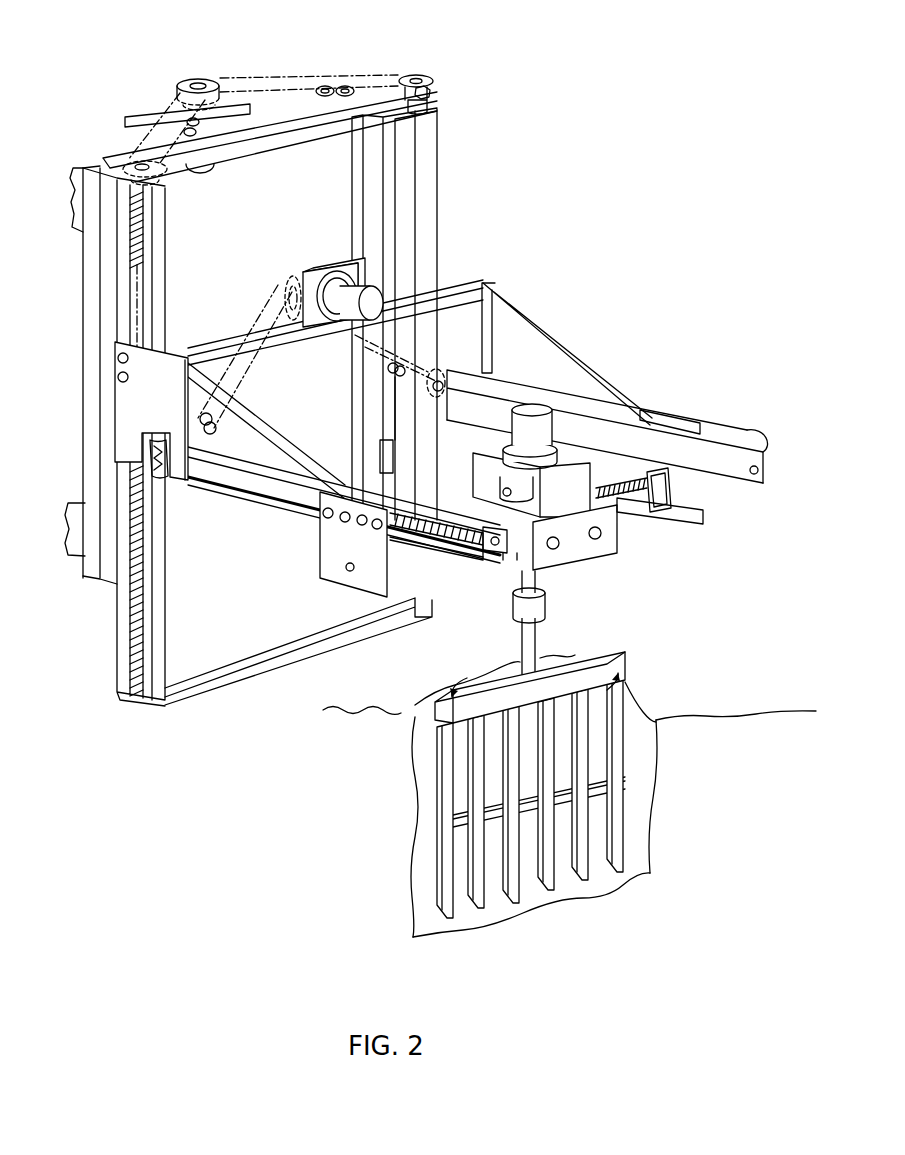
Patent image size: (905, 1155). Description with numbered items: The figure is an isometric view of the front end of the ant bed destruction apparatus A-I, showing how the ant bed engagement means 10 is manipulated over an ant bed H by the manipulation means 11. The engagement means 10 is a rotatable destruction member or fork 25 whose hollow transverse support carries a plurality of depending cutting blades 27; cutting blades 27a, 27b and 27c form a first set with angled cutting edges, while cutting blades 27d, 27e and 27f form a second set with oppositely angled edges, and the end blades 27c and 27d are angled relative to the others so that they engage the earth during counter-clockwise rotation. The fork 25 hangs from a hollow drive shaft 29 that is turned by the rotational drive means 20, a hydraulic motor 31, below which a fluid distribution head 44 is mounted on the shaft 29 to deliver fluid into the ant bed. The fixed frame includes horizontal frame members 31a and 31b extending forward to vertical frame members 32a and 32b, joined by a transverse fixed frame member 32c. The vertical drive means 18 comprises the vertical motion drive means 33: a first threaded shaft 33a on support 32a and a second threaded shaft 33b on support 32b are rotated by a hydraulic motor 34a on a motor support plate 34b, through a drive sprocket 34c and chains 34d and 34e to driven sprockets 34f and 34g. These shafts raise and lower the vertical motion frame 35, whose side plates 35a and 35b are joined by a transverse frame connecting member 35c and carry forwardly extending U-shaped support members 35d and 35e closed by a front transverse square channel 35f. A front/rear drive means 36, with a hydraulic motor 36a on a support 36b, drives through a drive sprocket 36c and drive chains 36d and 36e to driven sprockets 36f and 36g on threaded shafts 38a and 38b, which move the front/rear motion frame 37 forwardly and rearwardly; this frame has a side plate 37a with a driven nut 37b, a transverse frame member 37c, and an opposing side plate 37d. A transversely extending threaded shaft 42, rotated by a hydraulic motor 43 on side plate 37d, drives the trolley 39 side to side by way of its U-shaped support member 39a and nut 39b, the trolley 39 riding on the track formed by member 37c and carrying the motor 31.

The ant bed engagement means 10 is at (643, 638).
The manipulation means 11 is at (620, 257).
The vertical drive means 18 is at (449, 152).
The rotational drive means 20 is at (566, 396).
The rotatable destruction member 25 is at (563, 713).
The cutting blades 27 is at (520, 830).
The cutting blade 27a is at (550, 892).
The cutting blade 27b is at (588, 880).
The cutting blade 27c is at (625, 872).
The cutting blade 27d is at (443, 918).
The cutting blade 27e is at (480, 908).
The cutting blade 27f is at (514, 905).
The hollow drive shaft 29 is at (541, 584).
The hydraulic motor 31 is at (556, 425).
The horizontal frame member 31a is at (75, 208).
The horizontal frame member 31b is at (70, 540).
The vertical frame member 32a is at (160, 267).
The vertical frame member 32b is at (428, 223).
The transverse fixed frame member 32c is at (243, 150).
The vertical motion drive means 33 is at (190, 69).
The first threaded shaft 33a is at (133, 295).
The second threaded shaft 33b is at (422, 78).
The hydraulic motor 34a is at (193, 172).
The motor support plate 34b is at (147, 113).
The drive sprocket 34c is at (200, 78).
The chain 34d is at (140, 137).
The chain 34e is at (300, 72).
The driven sprocket 34f is at (127, 158).
The driven sprocket 34g is at (433, 88).
The vertical motion frame 35 is at (118, 421).
The side plate 35a is at (172, 423).
The side plate 35b is at (492, 294).
The transverse frame connecting member 35c is at (215, 348).
The forwardly extending support member 35d is at (258, 502).
The forwardly extending support member 35e is at (663, 425).
The front transverse square channel 35f is at (717, 482).
The front/rear drive means 36 is at (280, 257).
The hydraulic motor 36a is at (352, 290).
The support 36b is at (287, 278).
The drive sprocket 36c is at (272, 291).
The drive chain 36d is at (216, 424).
The drive chain 36e is at (388, 370).
The driven sprocket 36f is at (166, 480).
The driven sprocket 36g is at (445, 372).
The front/rear motion frame 37 is at (317, 576).
The side plate 37a is at (357, 567).
The driven nut 37b is at (397, 537).
The transverse frame member 37c is at (645, 527).
The side plate 37d is at (699, 420).
The threaded shaft 38a is at (307, 505).
The threaded shaft 38b is at (760, 470).
The transverse motion assembly 39 is at (594, 558).
The U-shaped transversely moving support member 39a is at (470, 496).
The nut 39b is at (508, 540).
The transversely extending threaded shaft 42 is at (636, 472).
The hydraulic motor 43 is at (758, 430).
The fluid distribution head 44 is at (506, 480).
The ant bed H is at (665, 781).
The apparatus A-I is at (536, 176).